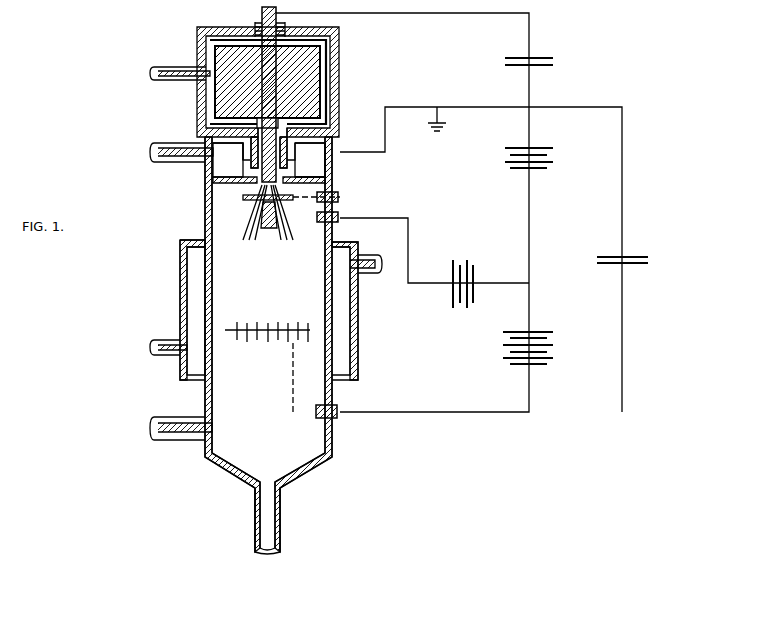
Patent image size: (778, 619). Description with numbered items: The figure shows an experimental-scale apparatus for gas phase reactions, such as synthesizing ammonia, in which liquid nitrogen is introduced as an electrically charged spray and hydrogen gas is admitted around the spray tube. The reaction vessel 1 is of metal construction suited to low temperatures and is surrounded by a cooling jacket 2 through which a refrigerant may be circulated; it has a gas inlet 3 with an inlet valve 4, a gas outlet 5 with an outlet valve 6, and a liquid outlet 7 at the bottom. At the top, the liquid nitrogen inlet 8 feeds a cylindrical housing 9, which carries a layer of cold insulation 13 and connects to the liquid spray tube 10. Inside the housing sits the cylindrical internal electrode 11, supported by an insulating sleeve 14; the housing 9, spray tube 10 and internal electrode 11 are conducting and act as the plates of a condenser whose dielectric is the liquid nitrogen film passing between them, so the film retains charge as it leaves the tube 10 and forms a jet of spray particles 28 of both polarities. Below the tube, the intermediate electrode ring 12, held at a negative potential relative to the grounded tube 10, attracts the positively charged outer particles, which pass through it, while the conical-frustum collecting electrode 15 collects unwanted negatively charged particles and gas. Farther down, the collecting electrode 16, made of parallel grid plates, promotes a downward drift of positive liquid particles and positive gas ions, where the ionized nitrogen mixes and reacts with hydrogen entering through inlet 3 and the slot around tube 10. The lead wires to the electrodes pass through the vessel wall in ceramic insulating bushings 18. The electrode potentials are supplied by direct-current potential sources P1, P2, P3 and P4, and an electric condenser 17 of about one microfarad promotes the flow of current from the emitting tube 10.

The vessel 1 is at (205, 209).
The cooling jacket 2 is at (180, 299).
The gas inlet 3 is at (168, 143).
The inlet valve 4 is at (212, 153).
The gas outlet 5 is at (160, 440).
The outlet valve 6 is at (208, 428).
The liquid outlet 7 is at (280, 530).
The liquid nitrogen inlet 8 is at (165, 66).
The cylindrical housing 9 is at (340, 58).
The liquid spray tube 10 is at (287, 172).
The internal electrode 11 is at (267, 87).
The intermediate electrode ring 12 is at (243, 201).
The layer of cold insulation 13 is at (338, 200).
The insulating sleeve 14 is at (258, 22).
The collecting electrode 15 is at (268, 228).
The collecting electrode 16 is at (240, 343).
The electric condenser 17 is at (636, 270).
The insulating bushings 18 is at (340, 83).
The spray particles 28 is at (248, 236).
The potential source P1 is at (546, 63).
The potential source P2 is at (546, 159).
The potential source P3 is at (460, 269).
The potential source P4 is at (546, 348).